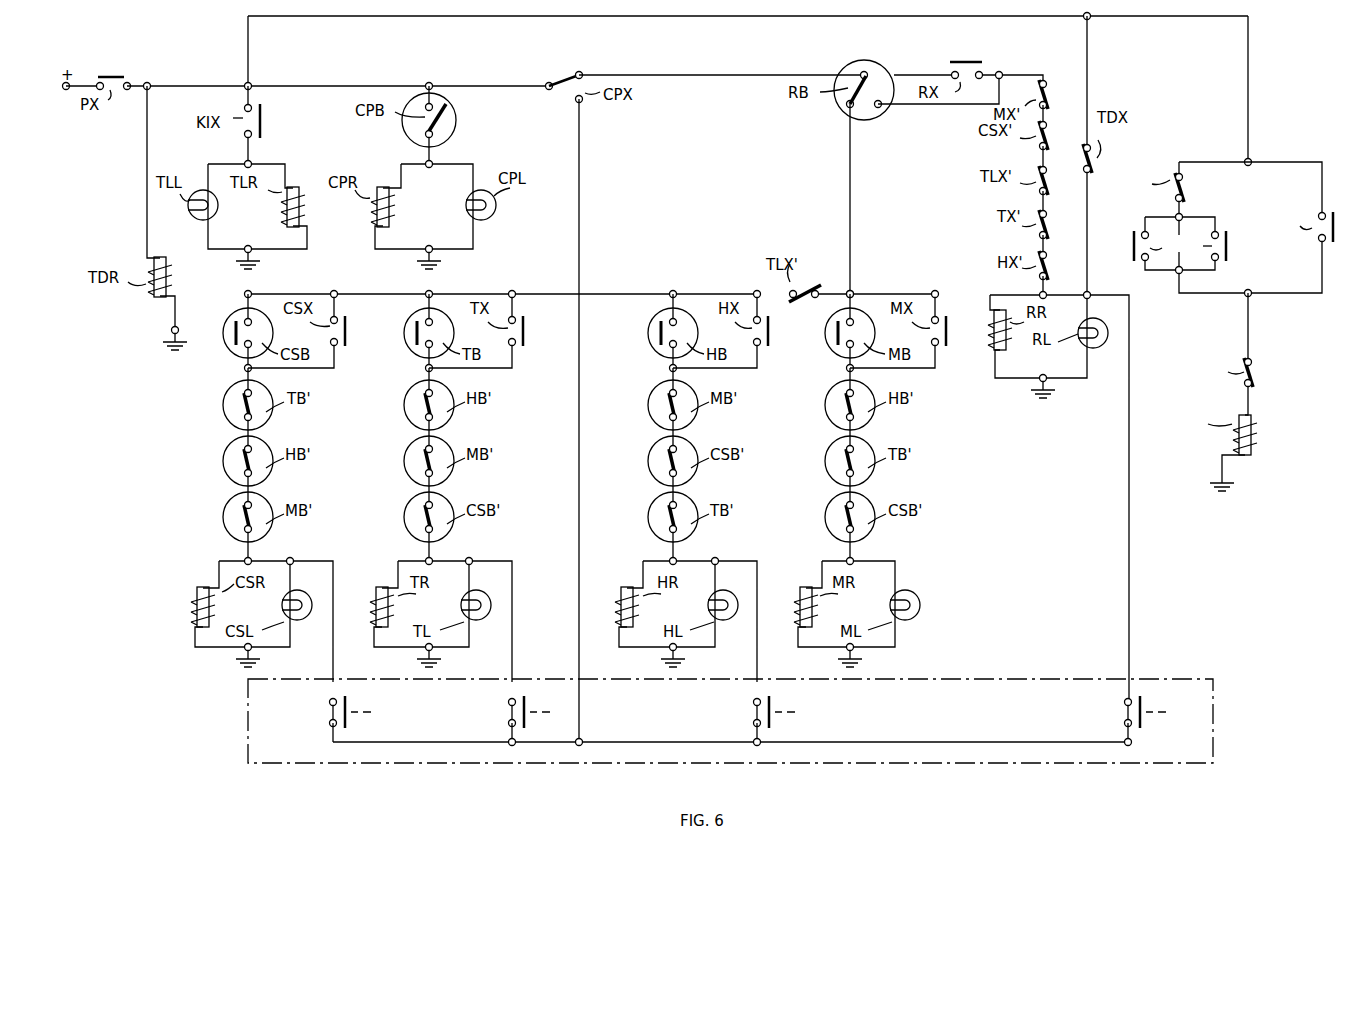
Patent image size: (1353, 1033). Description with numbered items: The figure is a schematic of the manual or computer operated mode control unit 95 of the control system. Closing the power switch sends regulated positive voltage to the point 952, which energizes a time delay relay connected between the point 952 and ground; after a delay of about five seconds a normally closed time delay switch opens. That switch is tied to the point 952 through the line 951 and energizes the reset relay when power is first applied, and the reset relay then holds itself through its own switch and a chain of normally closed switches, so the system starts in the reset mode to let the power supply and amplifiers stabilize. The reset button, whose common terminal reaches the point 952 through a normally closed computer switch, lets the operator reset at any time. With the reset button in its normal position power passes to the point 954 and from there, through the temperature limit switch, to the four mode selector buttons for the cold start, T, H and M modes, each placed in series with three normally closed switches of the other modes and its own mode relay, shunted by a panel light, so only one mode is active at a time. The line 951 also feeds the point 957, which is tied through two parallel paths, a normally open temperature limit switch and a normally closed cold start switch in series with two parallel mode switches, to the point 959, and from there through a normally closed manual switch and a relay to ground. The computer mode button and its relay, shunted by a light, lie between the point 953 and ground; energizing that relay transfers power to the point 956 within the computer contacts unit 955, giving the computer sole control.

The line 951 is at (672, 12).
The point 952 is at (252, 82).
The point 953 is at (427, 84).
The point 954 is at (854, 290).
The computer contacts unit 955 is at (730, 735).
The point 956 is at (583, 738).
The point 957 is at (1252, 158).
The point 959 is at (1252, 297).
The control unit 95 is at (1223, 329).